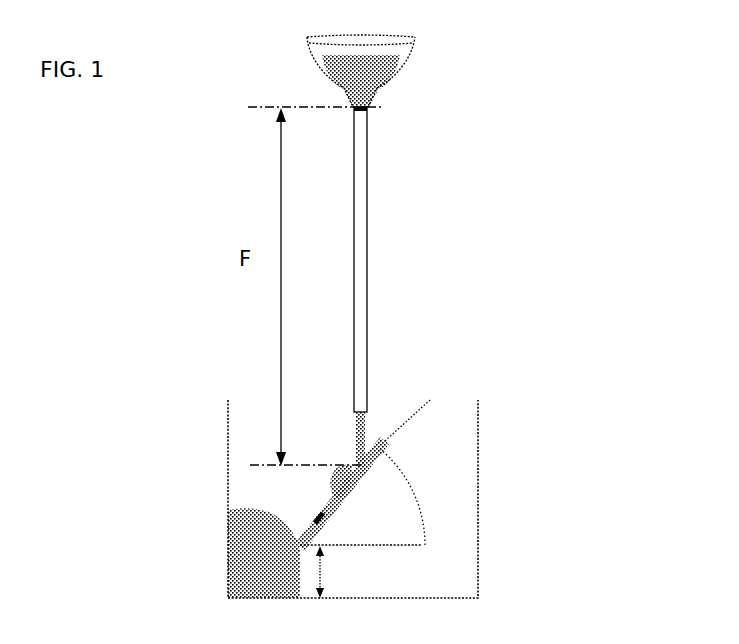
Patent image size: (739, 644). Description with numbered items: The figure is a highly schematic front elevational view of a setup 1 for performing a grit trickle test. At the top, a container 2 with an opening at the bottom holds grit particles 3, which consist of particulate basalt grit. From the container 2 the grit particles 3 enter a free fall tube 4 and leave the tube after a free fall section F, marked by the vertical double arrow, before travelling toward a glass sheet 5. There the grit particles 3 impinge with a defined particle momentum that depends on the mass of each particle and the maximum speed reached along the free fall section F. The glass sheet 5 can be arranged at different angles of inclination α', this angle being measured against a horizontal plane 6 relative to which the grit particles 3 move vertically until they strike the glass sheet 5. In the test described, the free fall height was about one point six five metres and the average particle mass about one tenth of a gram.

The setup 1 is at (560, 196).
The container 2 is at (312, 47).
The grit particles 3 is at (362, 77).
The free fall tube 4 is at (360, 341).
The glass sheet 5 is at (378, 447).
The horizontal plane 6 is at (403, 540).